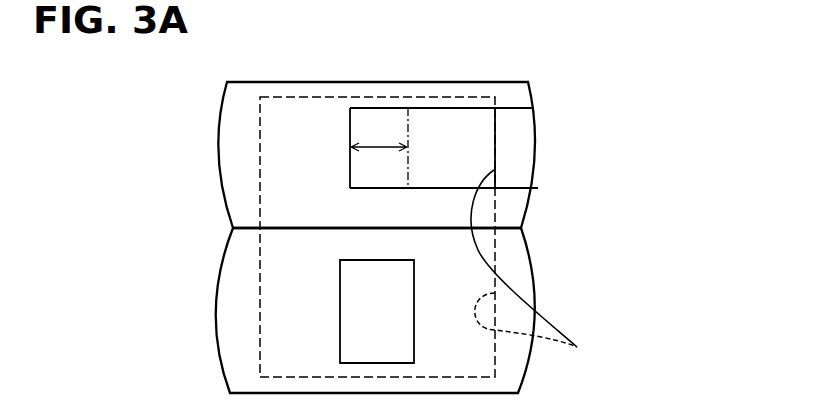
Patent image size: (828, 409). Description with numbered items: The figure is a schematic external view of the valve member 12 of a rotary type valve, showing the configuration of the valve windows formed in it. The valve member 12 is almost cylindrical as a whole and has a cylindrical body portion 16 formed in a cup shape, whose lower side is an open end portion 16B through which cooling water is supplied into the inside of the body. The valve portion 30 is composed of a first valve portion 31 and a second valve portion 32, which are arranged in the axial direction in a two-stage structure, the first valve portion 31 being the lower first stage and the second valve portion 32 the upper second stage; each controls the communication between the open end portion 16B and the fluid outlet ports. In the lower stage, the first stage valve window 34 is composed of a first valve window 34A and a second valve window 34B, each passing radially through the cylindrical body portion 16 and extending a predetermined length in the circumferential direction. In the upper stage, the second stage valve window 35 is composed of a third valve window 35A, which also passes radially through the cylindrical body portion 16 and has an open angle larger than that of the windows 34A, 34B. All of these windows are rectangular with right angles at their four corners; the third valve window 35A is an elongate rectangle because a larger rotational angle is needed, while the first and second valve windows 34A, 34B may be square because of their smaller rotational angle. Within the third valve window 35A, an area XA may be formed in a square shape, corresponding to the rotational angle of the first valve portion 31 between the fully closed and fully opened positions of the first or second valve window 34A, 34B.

The valve member 12 is at (427, 211).
The cylindrical body portion 16 is at (270, 88).
The valve portion 30 is at (427, 237).
The first valve portion 31 is at (406, 310).
The second valve portion 32 is at (517, 206).
The second stage valve window 35 is at (444, 108).
The third valve window 35A is at (444, 127).
The first stage valve window 34 is at (523, 332).
The first valve window 34A is at (377, 286).
The second valve window 34B is at (398, 345).
The open end portion 16B is at (549, 266).
The area XA is at (379, 135).